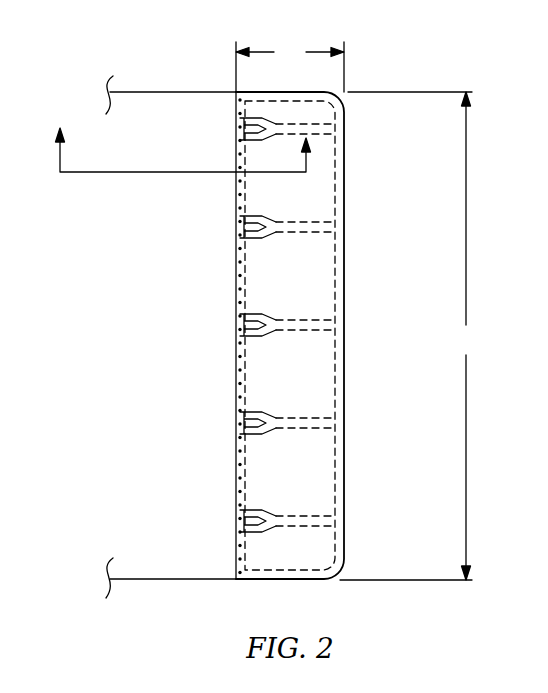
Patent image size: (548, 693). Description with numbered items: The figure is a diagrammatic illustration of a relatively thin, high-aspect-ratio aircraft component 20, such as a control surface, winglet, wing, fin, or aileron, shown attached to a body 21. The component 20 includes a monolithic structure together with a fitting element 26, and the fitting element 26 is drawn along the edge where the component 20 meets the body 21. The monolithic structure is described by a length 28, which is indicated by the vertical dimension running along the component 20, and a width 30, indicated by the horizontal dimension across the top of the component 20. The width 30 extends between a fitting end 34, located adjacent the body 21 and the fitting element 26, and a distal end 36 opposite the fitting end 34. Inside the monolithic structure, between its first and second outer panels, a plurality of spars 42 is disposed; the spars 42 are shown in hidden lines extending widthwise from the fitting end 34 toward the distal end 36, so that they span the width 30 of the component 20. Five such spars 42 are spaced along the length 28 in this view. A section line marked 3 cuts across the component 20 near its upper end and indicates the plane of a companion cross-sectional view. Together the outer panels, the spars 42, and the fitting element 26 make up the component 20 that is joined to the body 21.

The component 20 is at (354, 270).
The body 21 is at (150, 452).
The fitting element 26 is at (237, 258).
The length 28 is at (409, 336).
The width 30 is at (290, 66).
The fitting end 34 is at (236, 545).
The distal end 36 is at (343, 485).
The spars 42 is at (298, 418).
The section line for FIG. 3 is at (174, 150).